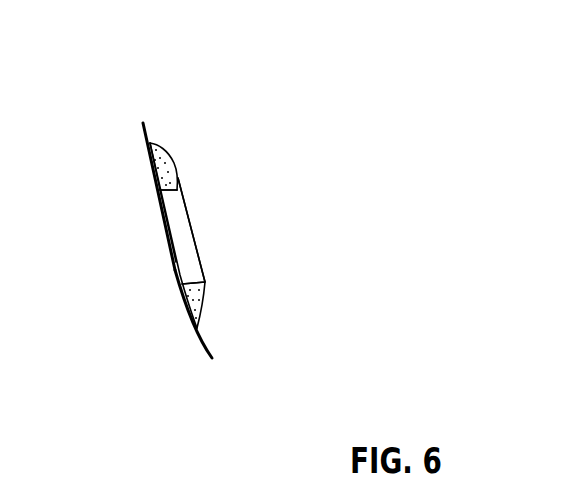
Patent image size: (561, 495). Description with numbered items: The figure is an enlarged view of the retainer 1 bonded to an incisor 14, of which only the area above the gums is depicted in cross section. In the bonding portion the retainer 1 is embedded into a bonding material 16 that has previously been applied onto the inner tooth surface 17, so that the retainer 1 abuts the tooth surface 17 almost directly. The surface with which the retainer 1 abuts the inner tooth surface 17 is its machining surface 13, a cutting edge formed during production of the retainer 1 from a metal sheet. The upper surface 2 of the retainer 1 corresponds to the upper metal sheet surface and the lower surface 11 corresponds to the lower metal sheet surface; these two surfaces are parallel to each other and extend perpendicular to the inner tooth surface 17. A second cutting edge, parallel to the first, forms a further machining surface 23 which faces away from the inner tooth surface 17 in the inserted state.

The retainer 1 is at (190, 206).
The upper surface 2 is at (175, 174).
The lower surface 11 is at (203, 283).
The machining surface 13 is at (170, 230).
The incisor 14 is at (115, 140).
The bonding material 16 is at (168, 151).
The inner tooth surface 17 is at (210, 339).
The machining surface 23 is at (201, 250).